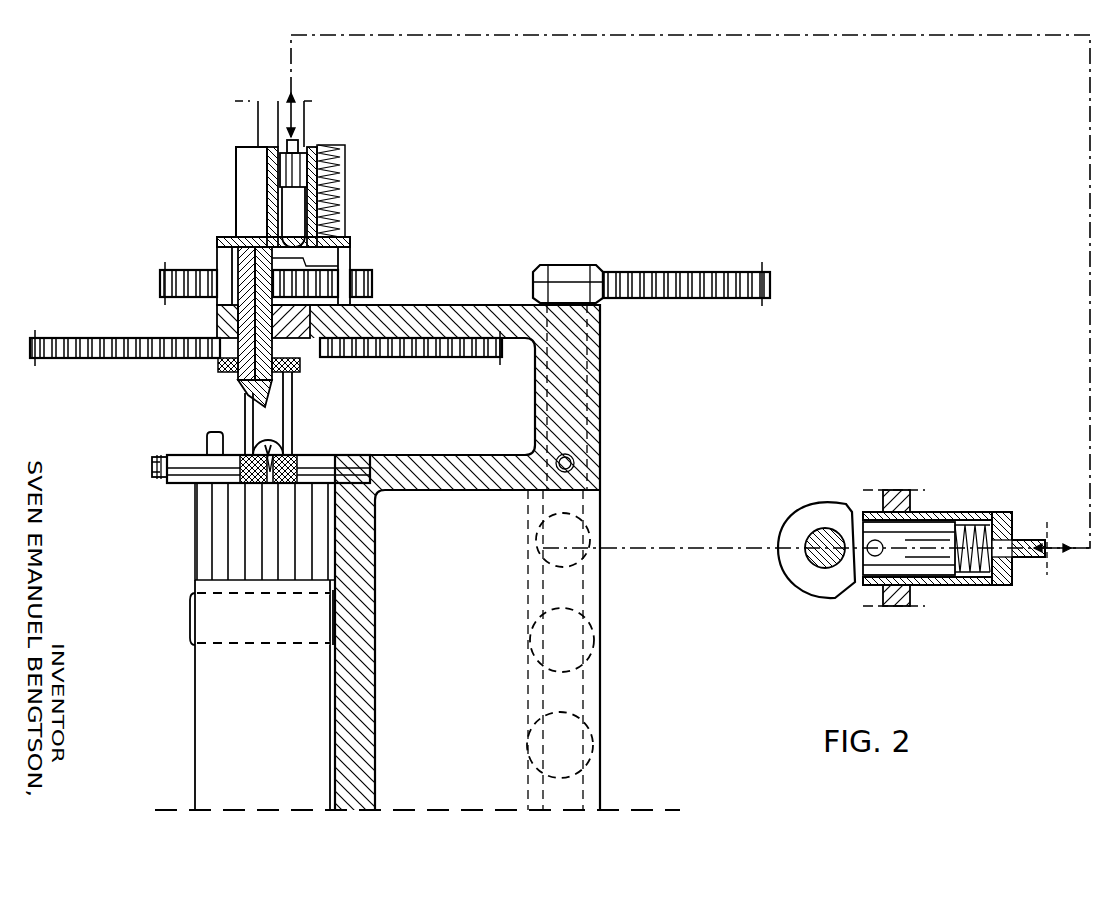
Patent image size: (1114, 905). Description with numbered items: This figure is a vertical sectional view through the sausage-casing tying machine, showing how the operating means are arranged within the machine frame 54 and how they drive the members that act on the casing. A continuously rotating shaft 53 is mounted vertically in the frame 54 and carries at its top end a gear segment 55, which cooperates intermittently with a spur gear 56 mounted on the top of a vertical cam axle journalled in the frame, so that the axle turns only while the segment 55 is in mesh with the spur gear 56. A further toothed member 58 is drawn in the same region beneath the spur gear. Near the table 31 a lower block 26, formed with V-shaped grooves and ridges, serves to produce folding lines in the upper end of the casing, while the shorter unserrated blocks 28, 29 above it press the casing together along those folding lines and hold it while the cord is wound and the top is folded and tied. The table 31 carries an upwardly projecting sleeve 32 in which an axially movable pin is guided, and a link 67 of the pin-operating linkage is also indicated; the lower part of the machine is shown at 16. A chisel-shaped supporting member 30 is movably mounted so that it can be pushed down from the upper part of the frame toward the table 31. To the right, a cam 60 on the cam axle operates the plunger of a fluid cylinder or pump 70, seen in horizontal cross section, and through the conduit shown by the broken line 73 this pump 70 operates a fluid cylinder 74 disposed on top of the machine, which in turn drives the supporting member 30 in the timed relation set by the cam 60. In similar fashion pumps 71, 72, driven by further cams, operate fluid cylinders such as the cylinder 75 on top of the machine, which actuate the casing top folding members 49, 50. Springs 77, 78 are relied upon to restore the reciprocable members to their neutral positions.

The base column 16 is at (193, 615).
The block 26 is at (197, 518).
The block 28 is at (247, 450).
The block 29 is at (296, 455).
The supporting member 30 is at (293, 375).
The table 31 is at (160, 455).
The sleeve 32 is at (205, 432).
The sausage case top folding member 49 is at (235, 362).
The sausage case top folding member 50 is at (245, 393).
The continuously rotating shaft 53 is at (565, 265).
The machine frame 54 is at (600, 700).
The gear segment 55 is at (728, 272).
The spur gear 56 is at (363, 270).
The table gear 58 is at (118, 358).
The cam member 60 is at (790, 514).
The link 67 is at (160, 478).
The fluid cylinder 70 is at (590, 530).
The fluid cylinder 71 is at (600, 645).
The fluid cylinder 72 is at (590, 780).
The conduit 73 is at (1088, 200).
The fluid cylinder 74 is at (307, 145).
The fluid cylinder 75 is at (236, 172).
The spring means 77 is at (986, 515).
The spring means 78 is at (342, 180).